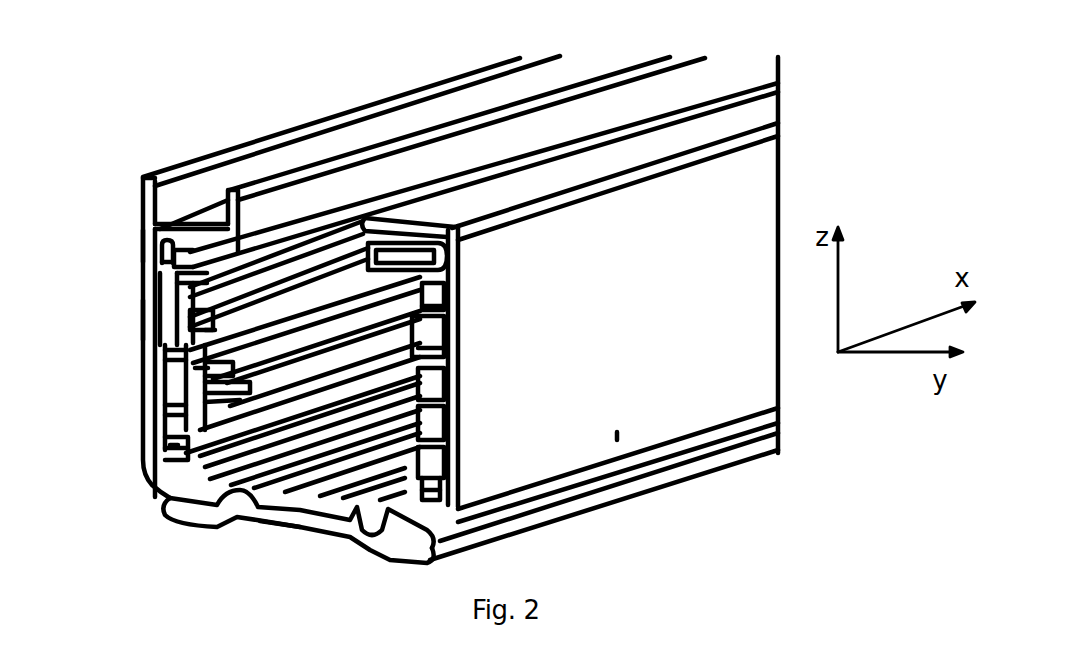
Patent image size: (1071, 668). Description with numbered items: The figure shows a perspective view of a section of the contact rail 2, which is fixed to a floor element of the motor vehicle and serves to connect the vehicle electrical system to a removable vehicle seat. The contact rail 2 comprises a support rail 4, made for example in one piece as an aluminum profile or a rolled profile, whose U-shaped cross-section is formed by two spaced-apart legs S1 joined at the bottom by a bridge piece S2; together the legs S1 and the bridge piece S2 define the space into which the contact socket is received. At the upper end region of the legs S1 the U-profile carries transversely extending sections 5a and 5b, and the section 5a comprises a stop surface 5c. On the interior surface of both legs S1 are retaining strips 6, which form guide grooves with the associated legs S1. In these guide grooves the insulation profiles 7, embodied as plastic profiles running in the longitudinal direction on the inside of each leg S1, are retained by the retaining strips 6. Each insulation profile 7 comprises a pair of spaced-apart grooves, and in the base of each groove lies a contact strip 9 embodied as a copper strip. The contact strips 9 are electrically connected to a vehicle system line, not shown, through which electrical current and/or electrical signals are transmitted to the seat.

The contact rail 2 is at (150, 244).
The support rail 4 is at (212, 402).
The transversely extending section 5a is at (762, 107).
The transversely extending section 5b is at (210, 190).
The stop surface 5c is at (485, 179).
The retaining strip 6 is at (170, 266).
The insulation profile 7 is at (205, 368).
The contact strip 9 is at (213, 330).
The leg S1 is at (150, 324).
The bridge piece S2 is at (300, 528).